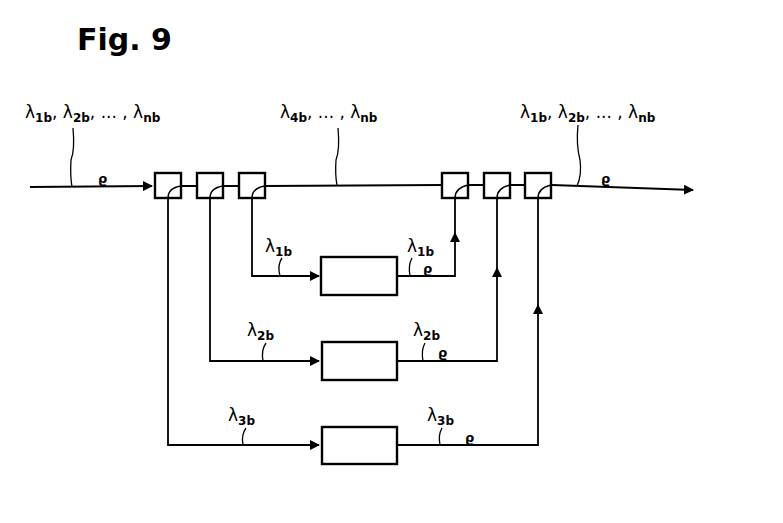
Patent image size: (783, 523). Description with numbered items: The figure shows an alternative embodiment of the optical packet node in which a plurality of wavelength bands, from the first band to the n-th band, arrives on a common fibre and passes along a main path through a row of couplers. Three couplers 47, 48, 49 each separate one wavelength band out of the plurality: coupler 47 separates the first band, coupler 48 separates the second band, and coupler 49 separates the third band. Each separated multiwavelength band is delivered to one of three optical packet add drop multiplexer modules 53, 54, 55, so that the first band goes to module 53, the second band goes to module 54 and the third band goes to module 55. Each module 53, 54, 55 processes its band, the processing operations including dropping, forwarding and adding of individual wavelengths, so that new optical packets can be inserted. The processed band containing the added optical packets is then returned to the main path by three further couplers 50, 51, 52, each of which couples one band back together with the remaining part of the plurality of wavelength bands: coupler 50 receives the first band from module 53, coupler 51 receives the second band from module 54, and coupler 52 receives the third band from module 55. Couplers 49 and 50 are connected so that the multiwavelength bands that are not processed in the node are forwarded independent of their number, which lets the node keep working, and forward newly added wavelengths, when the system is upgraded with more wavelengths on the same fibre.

The coupler 47 is at (167, 182).
The coupler 48 is at (210, 182).
The coupler 49 is at (252, 182).
The coupler 50 is at (453, 182).
The coupler 51 is at (493, 182).
The coupler 52 is at (535, 182).
The optical packet add drop multiplexer module 53 is at (361, 266).
The optical packet add drop multiplexer module 54 is at (360, 352).
The optical packet add drop multiplexer module 55 is at (361, 437).